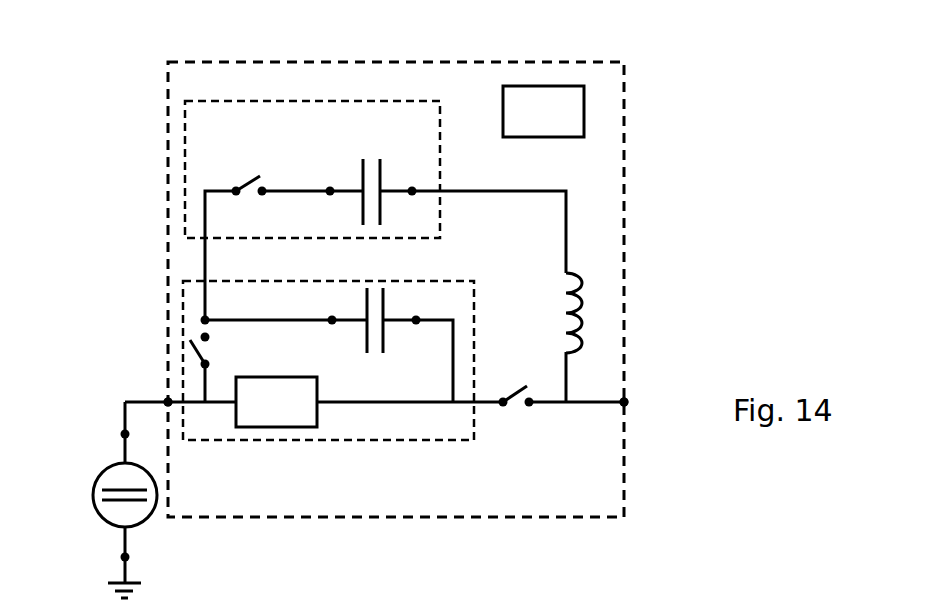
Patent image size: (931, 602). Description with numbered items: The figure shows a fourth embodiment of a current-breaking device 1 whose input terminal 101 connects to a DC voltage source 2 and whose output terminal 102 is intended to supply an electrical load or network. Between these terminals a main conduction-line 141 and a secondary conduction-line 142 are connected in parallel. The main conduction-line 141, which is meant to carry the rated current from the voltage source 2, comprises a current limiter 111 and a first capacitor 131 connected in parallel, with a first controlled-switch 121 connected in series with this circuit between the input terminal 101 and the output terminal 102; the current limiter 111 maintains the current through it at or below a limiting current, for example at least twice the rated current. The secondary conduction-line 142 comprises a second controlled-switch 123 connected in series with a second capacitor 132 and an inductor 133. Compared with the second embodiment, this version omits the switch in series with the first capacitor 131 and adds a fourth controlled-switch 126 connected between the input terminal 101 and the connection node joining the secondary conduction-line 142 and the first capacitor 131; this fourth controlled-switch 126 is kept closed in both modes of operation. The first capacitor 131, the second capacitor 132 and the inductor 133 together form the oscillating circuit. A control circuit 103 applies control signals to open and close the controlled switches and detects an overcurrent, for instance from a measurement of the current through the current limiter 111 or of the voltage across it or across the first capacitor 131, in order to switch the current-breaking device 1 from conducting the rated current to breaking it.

The current-breaking device 1 is at (168, 289).
The DC voltage source 2 is at (93, 495).
The input terminal 101 is at (168, 402).
The output terminal 102 is at (622, 404).
The control circuit 103 is at (541, 86).
The current limiter 111 is at (275, 428).
The first controlled-switch 121 is at (518, 400).
The second controlled-switch 123 is at (252, 175).
The fourth controlled-switch 126 is at (190, 350).
The first capacitor 131 is at (358, 310).
The second capacitor 132 is at (354, 180).
The inductor 133 is at (581, 290).
The main conduction-line 141 is at (474, 363).
The secondary conduction-line 142 is at (185, 170).